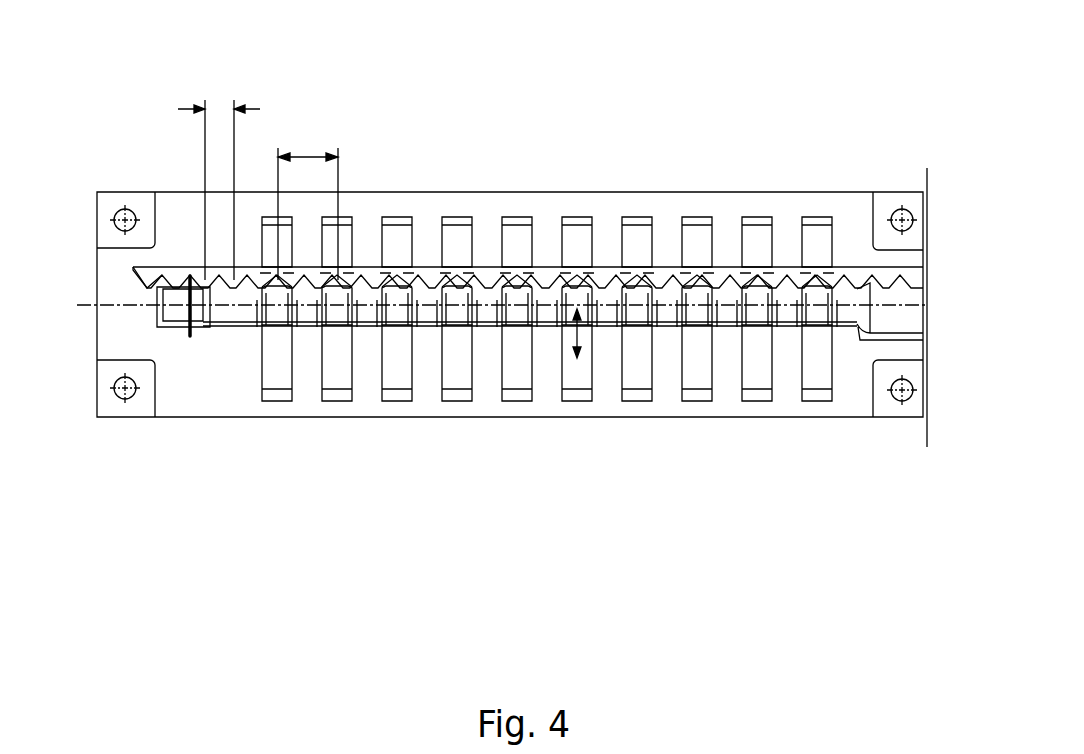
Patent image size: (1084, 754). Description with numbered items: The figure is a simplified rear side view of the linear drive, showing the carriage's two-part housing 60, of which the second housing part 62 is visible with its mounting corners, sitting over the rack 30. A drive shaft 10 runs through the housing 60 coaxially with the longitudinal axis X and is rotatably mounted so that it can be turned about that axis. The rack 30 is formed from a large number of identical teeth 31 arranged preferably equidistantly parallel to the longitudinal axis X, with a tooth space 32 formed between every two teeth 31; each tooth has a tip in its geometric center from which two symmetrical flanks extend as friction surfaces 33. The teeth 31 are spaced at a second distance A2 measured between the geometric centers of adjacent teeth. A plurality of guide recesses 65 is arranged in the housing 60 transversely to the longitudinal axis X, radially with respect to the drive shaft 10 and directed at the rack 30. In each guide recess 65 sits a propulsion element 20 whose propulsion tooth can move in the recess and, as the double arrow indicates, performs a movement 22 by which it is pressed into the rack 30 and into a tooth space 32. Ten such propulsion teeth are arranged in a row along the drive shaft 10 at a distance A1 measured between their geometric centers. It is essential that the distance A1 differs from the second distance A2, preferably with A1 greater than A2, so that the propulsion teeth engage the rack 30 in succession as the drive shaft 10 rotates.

The drive shaft 10 is at (860, 290).
The propulsion element 20 is at (547, 369).
The movement 22 is at (579, 360).
The rack 30 is at (143, 270).
The teeth 31 is at (177, 272).
The tooth space 32 is at (158, 270).
The friction surfaces 33 is at (140, 283).
The housing 60 is at (512, 266).
The second housing part 62 is at (613, 207).
The guide recesses 65 is at (700, 393).
The longitudinal axis X is at (127, 308).
The distance between propulsion teeth A1 is at (312, 157).
The second distance between teeth A2 is at (223, 109).